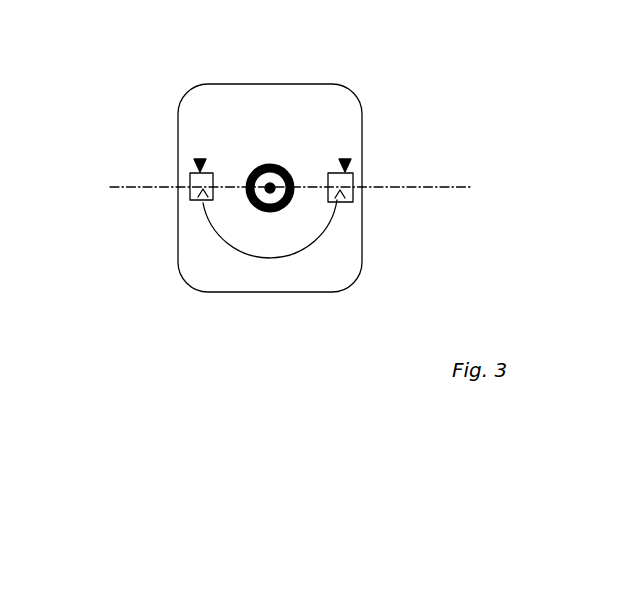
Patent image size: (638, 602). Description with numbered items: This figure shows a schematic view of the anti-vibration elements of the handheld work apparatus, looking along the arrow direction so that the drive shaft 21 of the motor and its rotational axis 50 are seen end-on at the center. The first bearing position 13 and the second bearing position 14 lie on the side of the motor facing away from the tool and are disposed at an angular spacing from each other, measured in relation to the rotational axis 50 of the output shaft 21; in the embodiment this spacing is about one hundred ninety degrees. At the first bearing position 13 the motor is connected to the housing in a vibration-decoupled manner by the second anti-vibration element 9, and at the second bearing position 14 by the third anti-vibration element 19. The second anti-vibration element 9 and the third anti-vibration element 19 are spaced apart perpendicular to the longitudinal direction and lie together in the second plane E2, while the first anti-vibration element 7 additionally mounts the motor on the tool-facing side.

The first anti-vibration element 7 is at (272, 186).
The second anti-vibration element 9 is at (195, 194).
The first bearing position 13 is at (200, 160).
The second bearing position 14 is at (347, 160).
The third anti-vibration element 19 is at (352, 197).
The drive shaft 21 is at (270, 188).
The rotational axis 50 is at (292, 173).
The second plane E2 is at (125, 185).